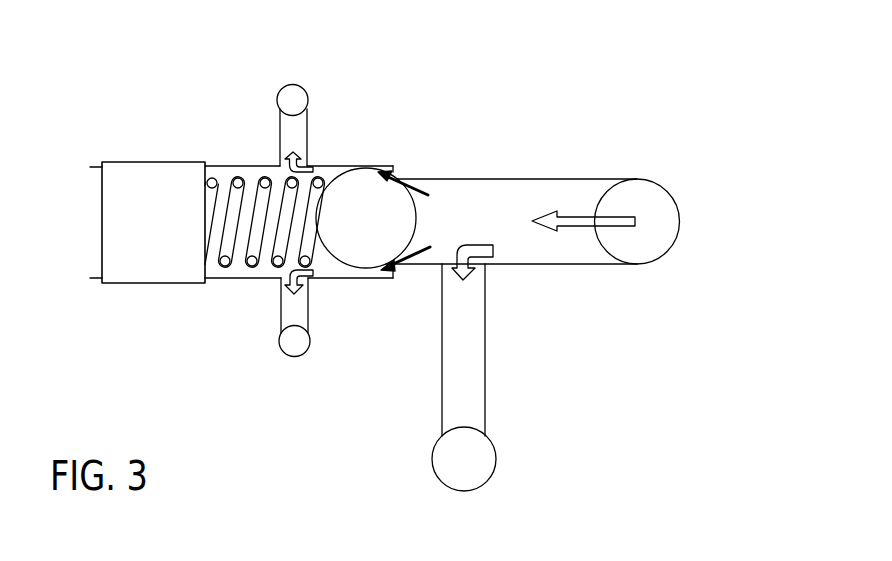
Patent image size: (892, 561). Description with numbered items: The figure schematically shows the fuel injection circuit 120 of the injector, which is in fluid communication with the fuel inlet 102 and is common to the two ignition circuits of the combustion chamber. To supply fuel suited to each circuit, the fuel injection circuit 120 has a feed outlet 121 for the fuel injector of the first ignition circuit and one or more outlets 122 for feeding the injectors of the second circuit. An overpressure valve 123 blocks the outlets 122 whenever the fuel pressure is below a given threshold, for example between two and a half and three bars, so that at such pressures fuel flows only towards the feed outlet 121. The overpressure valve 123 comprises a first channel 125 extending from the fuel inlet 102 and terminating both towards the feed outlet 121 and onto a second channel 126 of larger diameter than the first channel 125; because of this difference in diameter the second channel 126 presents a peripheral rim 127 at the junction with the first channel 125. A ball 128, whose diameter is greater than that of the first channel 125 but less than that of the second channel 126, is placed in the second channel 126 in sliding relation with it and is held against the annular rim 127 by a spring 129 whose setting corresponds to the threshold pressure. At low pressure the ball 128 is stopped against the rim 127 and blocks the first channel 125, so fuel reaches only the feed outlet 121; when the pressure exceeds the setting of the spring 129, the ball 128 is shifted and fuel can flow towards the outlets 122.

The fuel inlet 102 is at (657, 238).
The fuel injection circuit 120 is at (566, 303).
The feed outlet 121 is at (478, 463).
The outlets 122 is at (300, 98).
The overpressure valve 123 is at (236, 172).
The first channel 125 is at (522, 187).
The second channel 126 is at (242, 272).
The peripheral rim 127 is at (393, 167).
The ball 128 is at (358, 255).
The spring 129 is at (223, 265).